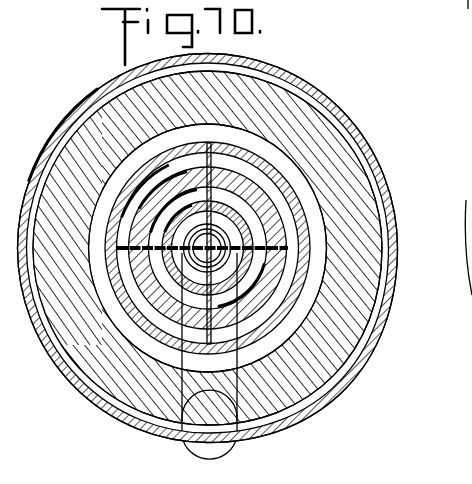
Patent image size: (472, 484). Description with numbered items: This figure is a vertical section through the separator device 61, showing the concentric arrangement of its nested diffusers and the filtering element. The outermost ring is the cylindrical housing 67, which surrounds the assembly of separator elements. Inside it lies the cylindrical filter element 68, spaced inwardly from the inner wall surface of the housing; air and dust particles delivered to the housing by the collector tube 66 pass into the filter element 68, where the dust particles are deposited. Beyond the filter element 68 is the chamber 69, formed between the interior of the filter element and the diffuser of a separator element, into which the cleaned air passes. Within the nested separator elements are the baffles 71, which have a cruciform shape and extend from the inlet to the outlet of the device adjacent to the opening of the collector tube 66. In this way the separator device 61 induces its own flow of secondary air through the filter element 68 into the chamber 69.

The separator device 61 is at (388, 146).
The collector tube 66 is at (227, 455).
The cylindrical housing 67 is at (394, 292).
The cylindrical filter element 68 is at (346, 340).
The chamber 69 is at (291, 167).
The baffles 71 is at (210, 143).